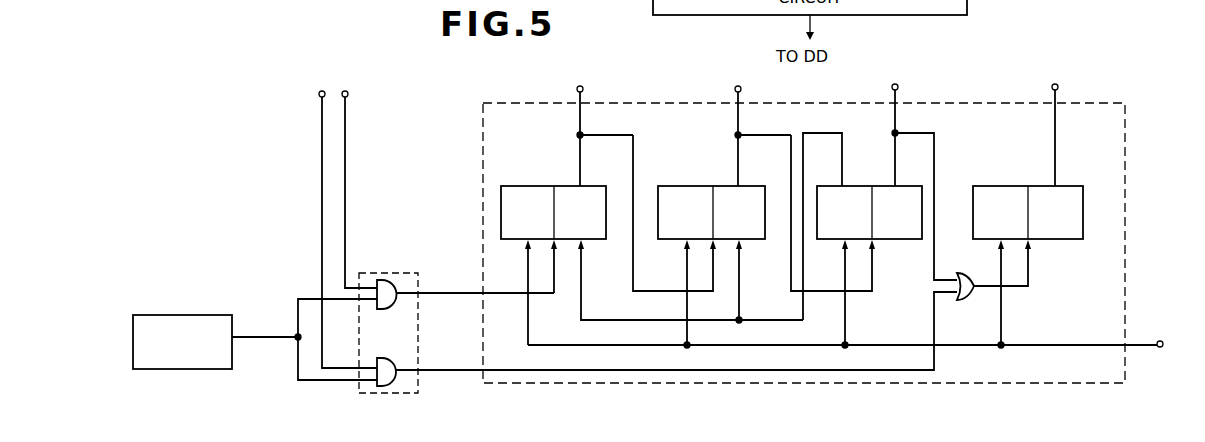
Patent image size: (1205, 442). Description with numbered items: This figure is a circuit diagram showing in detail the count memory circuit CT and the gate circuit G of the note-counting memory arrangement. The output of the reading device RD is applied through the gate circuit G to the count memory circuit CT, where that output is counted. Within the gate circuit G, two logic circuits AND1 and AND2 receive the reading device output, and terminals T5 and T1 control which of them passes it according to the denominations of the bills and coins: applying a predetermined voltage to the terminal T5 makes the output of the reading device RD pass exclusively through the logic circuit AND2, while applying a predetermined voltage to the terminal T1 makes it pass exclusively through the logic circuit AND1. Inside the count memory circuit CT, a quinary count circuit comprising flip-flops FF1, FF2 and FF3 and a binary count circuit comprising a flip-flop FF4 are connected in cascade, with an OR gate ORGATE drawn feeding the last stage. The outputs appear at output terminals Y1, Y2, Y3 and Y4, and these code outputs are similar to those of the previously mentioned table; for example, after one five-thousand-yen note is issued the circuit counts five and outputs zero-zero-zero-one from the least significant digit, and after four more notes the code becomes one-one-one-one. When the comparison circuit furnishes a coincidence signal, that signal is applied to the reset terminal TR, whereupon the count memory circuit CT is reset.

The reading device RD is at (140, 313).
The terminal T5 is at (341, 218).
The terminal T1 is at (356, 178).
The logic circuit AND1 is at (381, 280).
The logic circuit AND2 is at (381, 386).
The gate circuit G is at (418, 380).
The count memory circuit CT is at (1125, 152).
The flip-flop FF1 is at (527, 186).
The flip-flop FF2 is at (688, 186).
The flip-flop FF3 is at (857, 186).
The flip-flop FF4 is at (993, 186).
The output terminal Y1 is at (600, 124).
The output terminal Y2 is at (758, 124).
The output terminal Y3 is at (920, 170).
The output terminal Y4 is at (1055, 123).
The OR gate ORGATE is at (968, 300).
The reset terminal TR is at (850, 330).